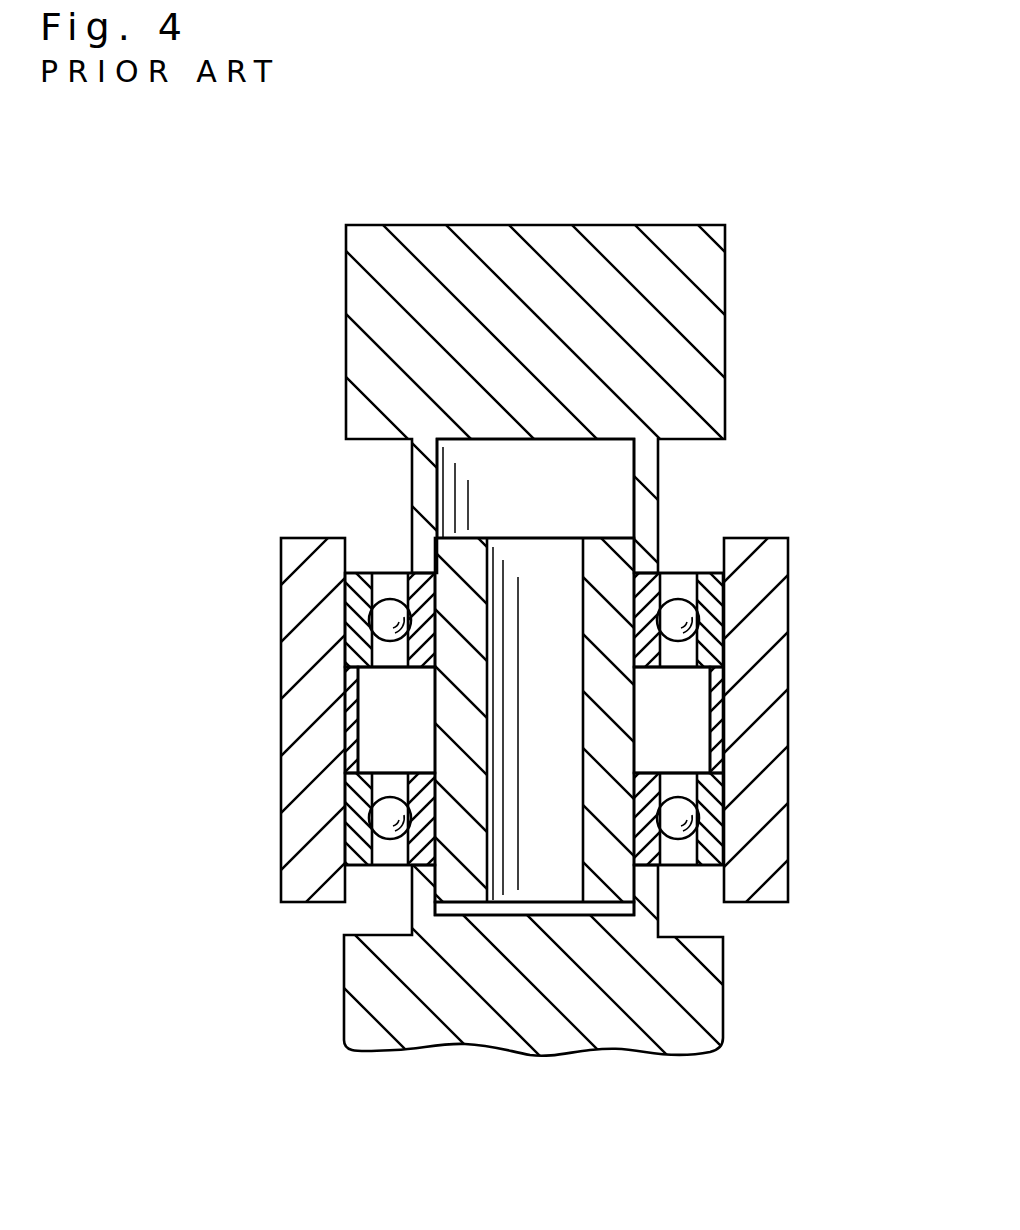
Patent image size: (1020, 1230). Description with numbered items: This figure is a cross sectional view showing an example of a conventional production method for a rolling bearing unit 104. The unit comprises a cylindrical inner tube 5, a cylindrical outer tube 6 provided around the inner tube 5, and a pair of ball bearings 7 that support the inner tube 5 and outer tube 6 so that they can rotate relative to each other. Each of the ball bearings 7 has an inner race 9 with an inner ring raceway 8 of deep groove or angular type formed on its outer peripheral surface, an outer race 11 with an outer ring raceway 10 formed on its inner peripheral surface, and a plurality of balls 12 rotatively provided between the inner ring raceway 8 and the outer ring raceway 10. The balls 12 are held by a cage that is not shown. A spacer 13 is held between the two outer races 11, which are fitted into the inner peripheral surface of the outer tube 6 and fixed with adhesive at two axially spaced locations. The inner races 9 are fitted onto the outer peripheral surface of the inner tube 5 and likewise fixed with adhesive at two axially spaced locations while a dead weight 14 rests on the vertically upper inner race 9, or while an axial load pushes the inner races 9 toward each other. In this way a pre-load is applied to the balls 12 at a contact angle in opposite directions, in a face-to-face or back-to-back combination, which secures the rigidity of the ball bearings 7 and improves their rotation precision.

The rolling bearing unit 104 is at (292, 498).
The inner tube 5 is at (470, 618).
The outer tube 6 is at (753, 548).
The ball bearings 7 is at (356, 788).
The inner ring raceway 8 is at (392, 830).
The inner race 9 is at (420, 643).
The outer ring raceway 10 is at (373, 818).
The outer race 11 is at (356, 600).
The balls 12 is at (393, 608).
The spacer 13 is at (723, 712).
The dead weight 14 is at (703, 323).